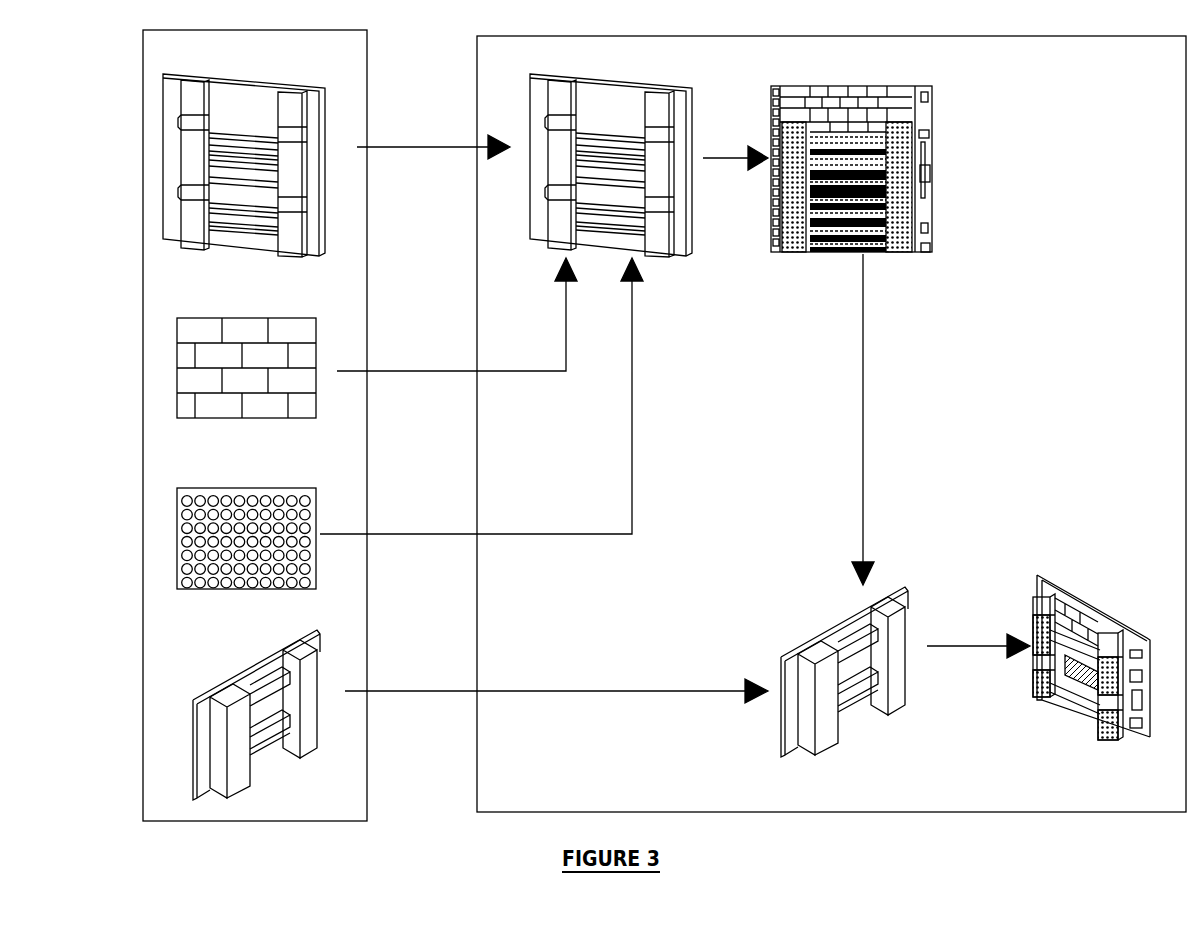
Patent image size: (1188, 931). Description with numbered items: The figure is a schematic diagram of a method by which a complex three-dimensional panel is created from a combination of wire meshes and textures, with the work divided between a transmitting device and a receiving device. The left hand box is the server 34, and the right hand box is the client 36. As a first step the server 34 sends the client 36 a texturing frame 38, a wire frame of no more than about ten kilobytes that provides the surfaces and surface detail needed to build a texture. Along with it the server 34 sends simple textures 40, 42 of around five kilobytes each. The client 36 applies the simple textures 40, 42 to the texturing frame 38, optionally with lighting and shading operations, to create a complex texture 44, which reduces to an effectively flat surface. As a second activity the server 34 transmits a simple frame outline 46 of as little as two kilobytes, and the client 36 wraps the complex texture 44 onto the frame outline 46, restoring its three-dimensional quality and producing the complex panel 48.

The server 34 is at (367, 62).
The client 36 is at (479, 72).
The texturing frame 38 is at (253, 80).
The simple texture 40 is at (250, 318).
The simple texture 42 is at (247, 488).
The simple frame outline 46 is at (257, 757).
The complex texture 44 is at (933, 117).
The complex panel 48 is at (1107, 612).